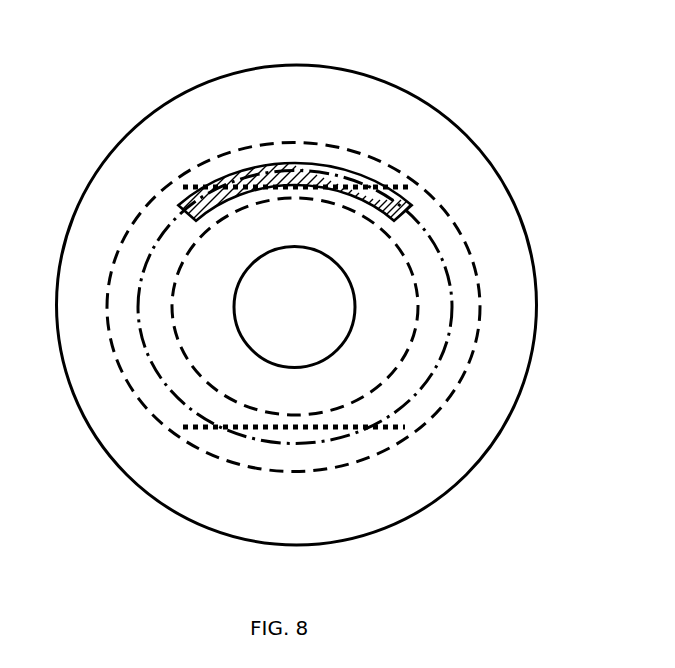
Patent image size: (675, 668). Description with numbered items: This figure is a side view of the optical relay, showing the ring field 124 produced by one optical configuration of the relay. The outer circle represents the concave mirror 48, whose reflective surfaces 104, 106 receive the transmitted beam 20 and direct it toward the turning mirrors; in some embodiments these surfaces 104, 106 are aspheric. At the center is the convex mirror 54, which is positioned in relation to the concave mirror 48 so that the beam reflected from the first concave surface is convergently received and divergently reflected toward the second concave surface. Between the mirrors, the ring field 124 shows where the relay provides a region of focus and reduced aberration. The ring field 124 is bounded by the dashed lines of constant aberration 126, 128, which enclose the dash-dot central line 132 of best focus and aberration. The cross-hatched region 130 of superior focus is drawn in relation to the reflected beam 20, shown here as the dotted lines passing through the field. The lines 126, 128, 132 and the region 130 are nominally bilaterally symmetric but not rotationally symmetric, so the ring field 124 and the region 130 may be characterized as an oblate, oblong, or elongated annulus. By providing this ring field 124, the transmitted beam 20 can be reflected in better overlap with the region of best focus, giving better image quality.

The concave mirror 48 is at (126, 133).
The surface of the concave mirror 104 is at (225, 135).
The surface of the concave mirror 106 is at (255, 487).
The ring field 124 is at (295, 147).
The cross-hatched region of superior focus 130 is at (348, 162).
The transmitted beam 20 is at (408, 185).
The convex mirror 54 is at (353, 288).
The line of constant aberration 126 is at (480, 289).
The central line of best focus and aberration 132 is at (452, 303).
The line of constant aberration 128 is at (407, 350).